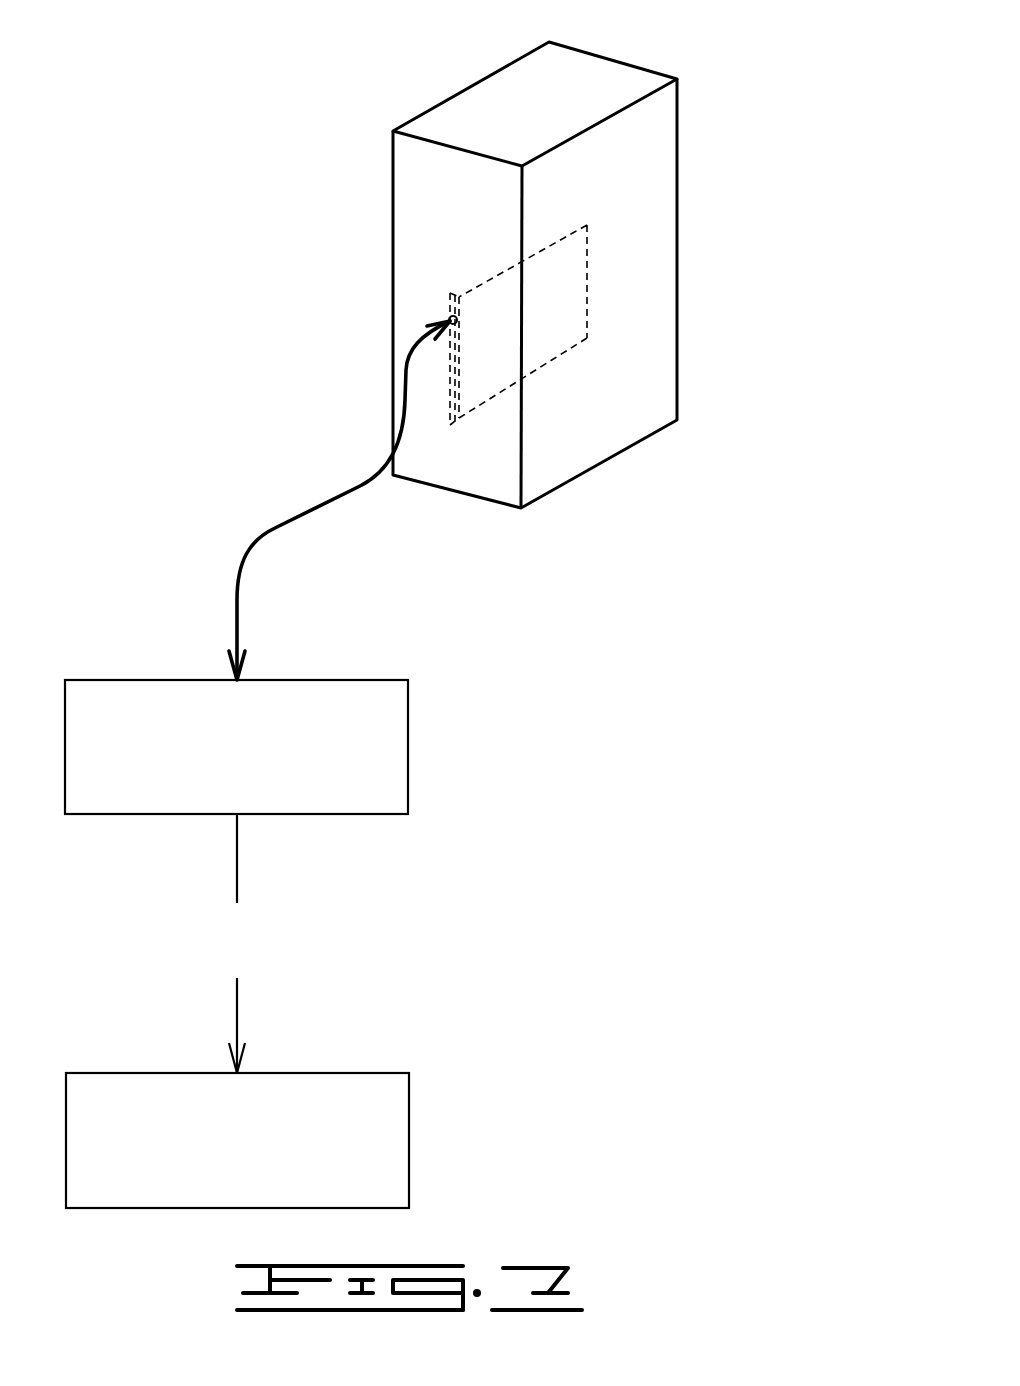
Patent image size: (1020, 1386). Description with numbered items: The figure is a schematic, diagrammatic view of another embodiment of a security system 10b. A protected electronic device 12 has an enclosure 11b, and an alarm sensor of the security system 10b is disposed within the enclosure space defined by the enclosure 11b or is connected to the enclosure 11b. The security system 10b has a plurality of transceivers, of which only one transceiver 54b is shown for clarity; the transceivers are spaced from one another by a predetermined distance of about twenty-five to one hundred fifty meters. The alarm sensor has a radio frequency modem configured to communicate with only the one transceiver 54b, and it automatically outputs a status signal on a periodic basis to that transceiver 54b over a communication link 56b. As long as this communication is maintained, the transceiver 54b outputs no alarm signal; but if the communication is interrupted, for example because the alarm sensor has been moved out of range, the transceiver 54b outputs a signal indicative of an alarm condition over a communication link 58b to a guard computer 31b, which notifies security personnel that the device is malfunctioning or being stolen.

The protected electronic device 12 is at (630, 62).
The enclosure 11b is at (678, 169).
The security system 10b is at (570, 330).
The communication link 56b is at (313, 507).
The transceiver 54b is at (409, 723).
The communication link 58b is at (239, 854).
The guard computer 31b is at (410, 1122).